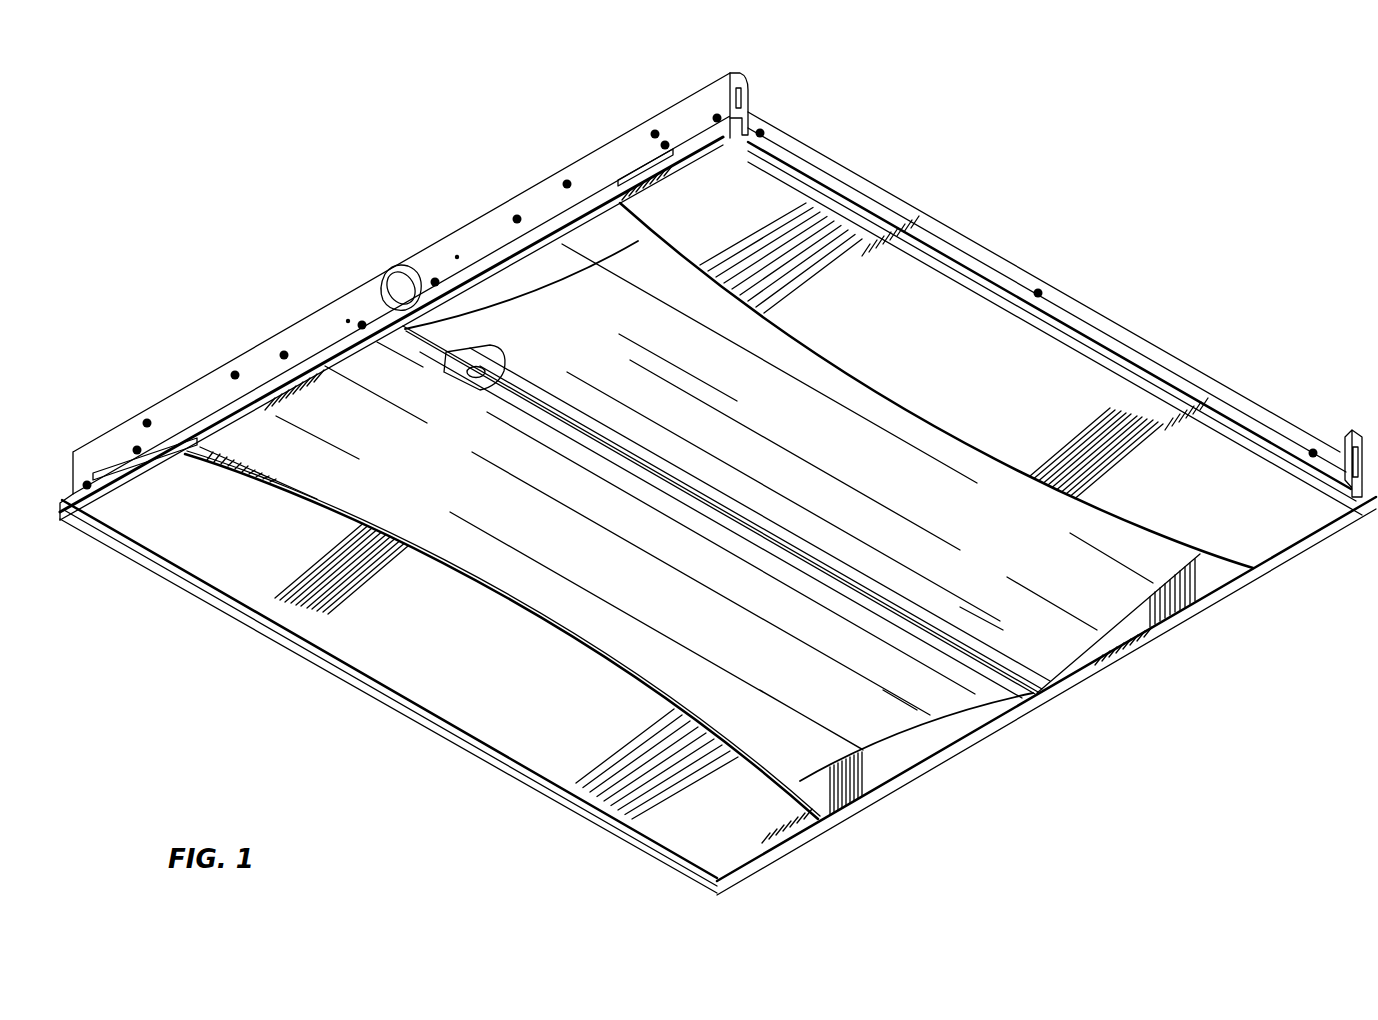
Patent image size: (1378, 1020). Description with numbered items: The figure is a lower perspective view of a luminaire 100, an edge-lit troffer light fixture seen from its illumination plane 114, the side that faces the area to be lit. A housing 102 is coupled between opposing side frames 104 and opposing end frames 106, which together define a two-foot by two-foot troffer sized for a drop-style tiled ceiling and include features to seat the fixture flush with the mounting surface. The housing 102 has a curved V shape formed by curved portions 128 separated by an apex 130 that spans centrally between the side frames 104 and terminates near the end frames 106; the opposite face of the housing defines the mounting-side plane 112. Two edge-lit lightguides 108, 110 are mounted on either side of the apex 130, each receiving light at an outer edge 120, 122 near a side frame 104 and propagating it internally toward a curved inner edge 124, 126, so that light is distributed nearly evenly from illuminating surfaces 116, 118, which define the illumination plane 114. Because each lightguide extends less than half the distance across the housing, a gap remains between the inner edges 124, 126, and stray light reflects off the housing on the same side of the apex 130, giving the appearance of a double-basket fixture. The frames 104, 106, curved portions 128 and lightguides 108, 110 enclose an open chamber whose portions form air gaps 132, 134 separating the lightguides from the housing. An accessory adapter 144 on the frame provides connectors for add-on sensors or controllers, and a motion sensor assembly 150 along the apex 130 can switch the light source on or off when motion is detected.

The luminaire 100 is at (975, 95).
The housing 102 is at (720, 507).
The side frame 104 is at (711, 502).
The end frame 106 is at (313, 330).
The lightguide 108 is at (829, 385).
The lightguide 110 is at (609, 635).
The mounting-side plane 112 is at (718, 484).
The illumination plane 114 is at (148, 608).
The illuminating surface 116 is at (453, 652).
The illuminating surface 118 is at (913, 362).
The outer edge 120 is at (550, 770).
The outer edge 122 is at (1072, 360).
The inner edge 124 is at (998, 462).
The inner edge 126 is at (602, 636).
The curved portion 128 is at (1153, 630).
The apex 130 is at (1037, 695).
The air gap 132 is at (815, 788).
The air gap 134 is at (1206, 575).
The accessory adapter 144 is at (401, 287).
The motion sensor assembly 150 is at (478, 348).